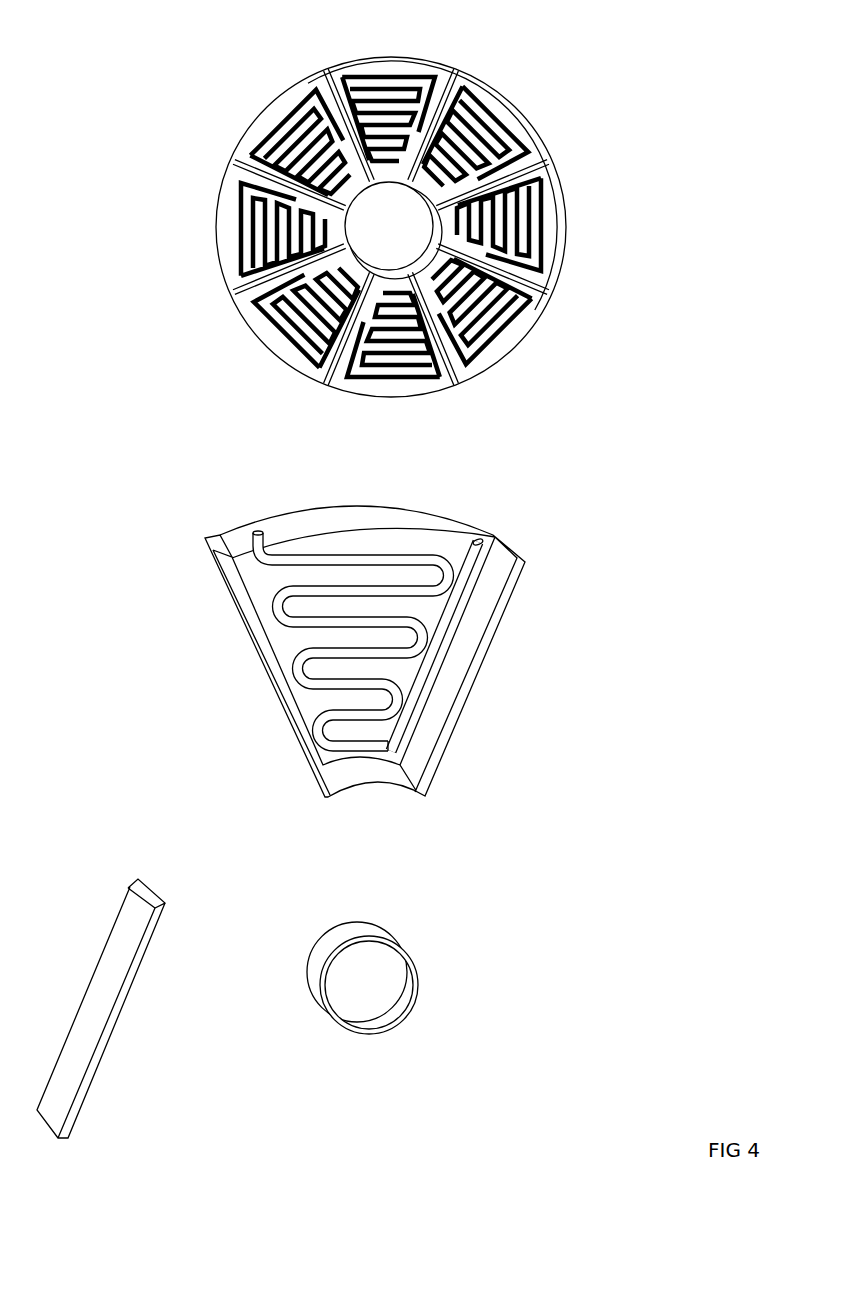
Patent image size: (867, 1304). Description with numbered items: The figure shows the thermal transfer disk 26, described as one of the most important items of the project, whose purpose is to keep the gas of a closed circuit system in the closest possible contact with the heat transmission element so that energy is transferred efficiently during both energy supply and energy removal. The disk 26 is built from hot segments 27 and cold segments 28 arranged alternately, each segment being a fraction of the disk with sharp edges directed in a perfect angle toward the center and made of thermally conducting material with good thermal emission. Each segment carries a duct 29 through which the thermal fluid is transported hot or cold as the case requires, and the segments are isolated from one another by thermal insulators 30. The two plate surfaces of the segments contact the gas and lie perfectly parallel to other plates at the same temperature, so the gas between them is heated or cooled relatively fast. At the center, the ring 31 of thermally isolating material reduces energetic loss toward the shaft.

The thermal transfer disk 26 is at (588, 239).
The hot segments 27 is at (227, 215).
The cold segments 28 is at (267, 337).
The duct 29 is at (383, 555).
The thermal insulators 30 is at (132, 920).
The ring 31 is at (417, 960).